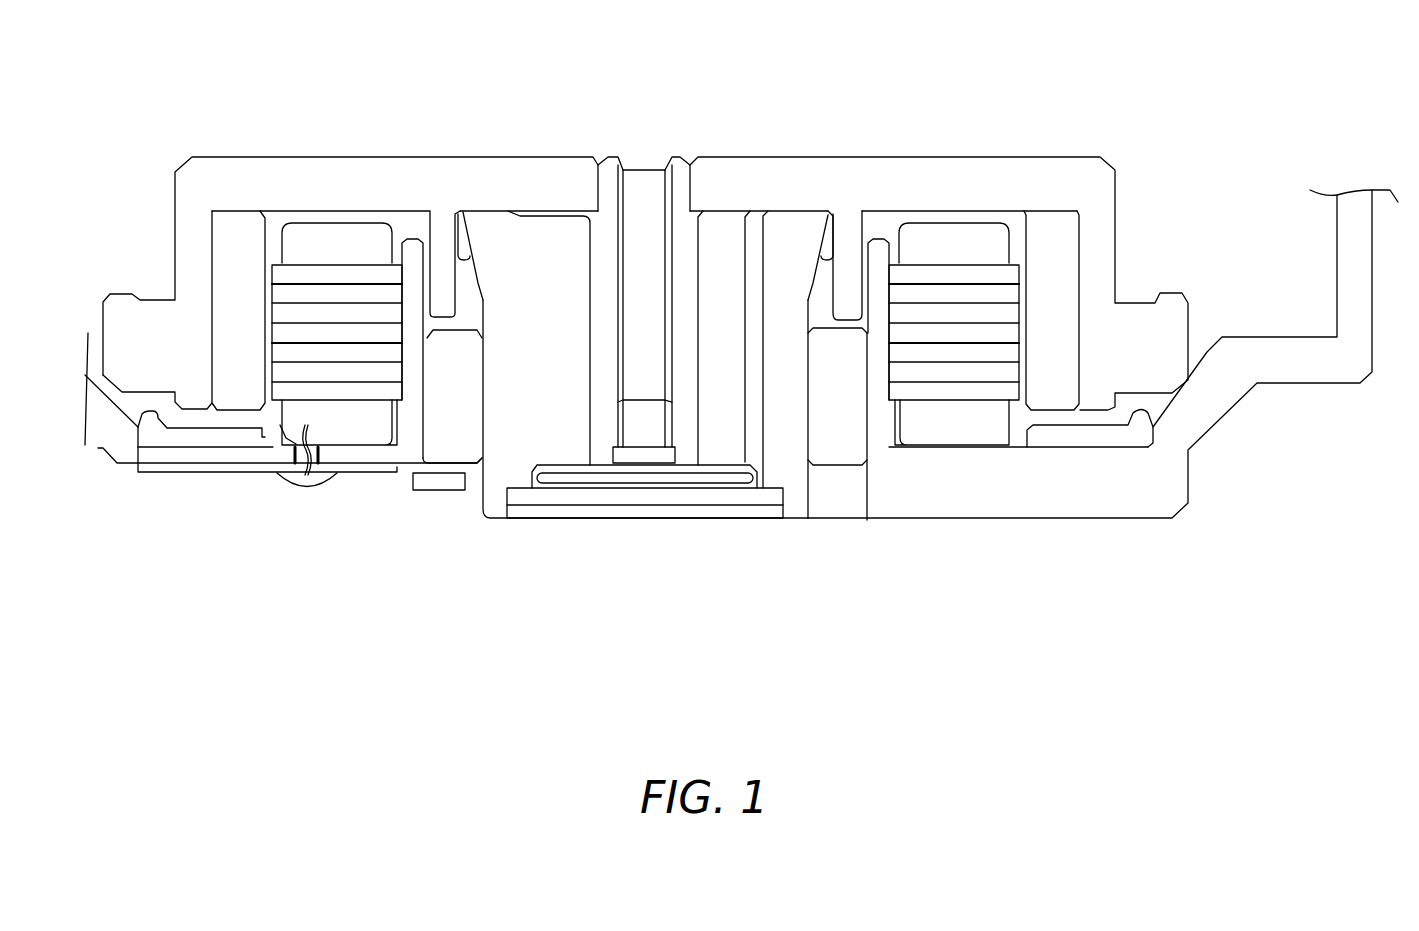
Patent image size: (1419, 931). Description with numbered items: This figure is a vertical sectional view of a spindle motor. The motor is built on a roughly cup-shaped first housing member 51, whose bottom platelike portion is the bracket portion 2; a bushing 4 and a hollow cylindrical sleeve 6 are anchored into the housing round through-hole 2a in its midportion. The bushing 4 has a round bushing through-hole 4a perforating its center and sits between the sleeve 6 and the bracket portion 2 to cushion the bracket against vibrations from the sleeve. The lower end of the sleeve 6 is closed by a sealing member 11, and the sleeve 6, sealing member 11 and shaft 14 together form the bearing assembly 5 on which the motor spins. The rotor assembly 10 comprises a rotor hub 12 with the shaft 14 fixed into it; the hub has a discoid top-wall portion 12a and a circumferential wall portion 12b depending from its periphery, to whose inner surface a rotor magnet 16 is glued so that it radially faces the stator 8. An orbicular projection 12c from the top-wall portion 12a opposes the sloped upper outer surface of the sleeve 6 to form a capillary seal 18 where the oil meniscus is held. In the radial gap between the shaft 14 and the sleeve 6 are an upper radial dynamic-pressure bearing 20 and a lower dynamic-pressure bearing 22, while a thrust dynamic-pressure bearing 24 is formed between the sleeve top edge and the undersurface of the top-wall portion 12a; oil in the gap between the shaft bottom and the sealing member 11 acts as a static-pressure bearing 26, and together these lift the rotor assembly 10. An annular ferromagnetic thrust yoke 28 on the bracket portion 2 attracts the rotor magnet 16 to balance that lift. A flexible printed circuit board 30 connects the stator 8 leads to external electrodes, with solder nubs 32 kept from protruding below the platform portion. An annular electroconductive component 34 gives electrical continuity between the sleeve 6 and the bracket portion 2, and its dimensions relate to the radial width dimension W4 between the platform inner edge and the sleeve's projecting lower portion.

The rotor assembly 10 is at (1102, 150).
The bracket portion 2 is at (1043, 483).
The housing round through-hole 2a is at (842, 362).
The bushing 4 is at (850, 432).
The bushing through-hole 4a is at (492, 393).
The bearing assembly 5 is at (677, 528).
The sleeve 6 is at (538, 373).
The stator 8 is at (970, 300).
The sealing member 11 is at (647, 500).
The rotor hub 12 is at (925, 182).
The top-wall portion 12a is at (753, 193).
The circumferential wall portion 12b is at (1097, 283).
The orbicular projection 12c is at (847, 257).
The shaft 14 is at (645, 193).
The rotor magnet 16 is at (1043, 370).
The capillary seal 18 is at (463, 212).
The upper radial dynamic-pressure bearing 20 is at (590, 265).
The lower dynamic-pressure bearing 22 is at (580, 410).
The thrust dynamic-pressure bearing 24 is at (502, 212).
The static-pressure bearing 26 is at (645, 486).
The thrust yoke 28 is at (177, 437).
The flexible printed circuit board 30 is at (247, 468).
The solder nubs 32 is at (300, 483).
The electroconductive component 34 is at (447, 482).
The first housing member 51 is at (1343, 237).
The radial width dimension W4 is at (808, 520).